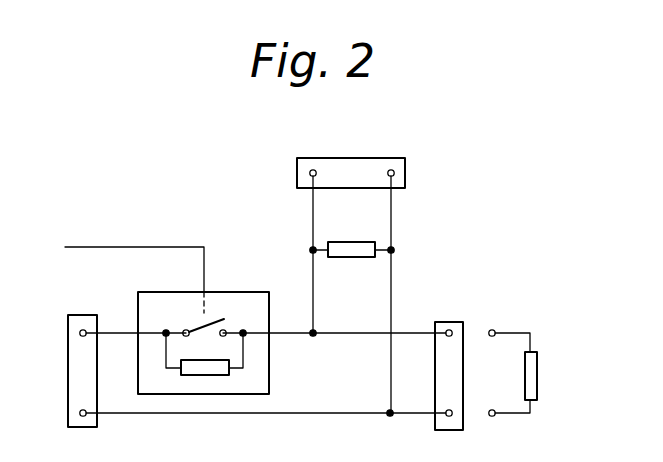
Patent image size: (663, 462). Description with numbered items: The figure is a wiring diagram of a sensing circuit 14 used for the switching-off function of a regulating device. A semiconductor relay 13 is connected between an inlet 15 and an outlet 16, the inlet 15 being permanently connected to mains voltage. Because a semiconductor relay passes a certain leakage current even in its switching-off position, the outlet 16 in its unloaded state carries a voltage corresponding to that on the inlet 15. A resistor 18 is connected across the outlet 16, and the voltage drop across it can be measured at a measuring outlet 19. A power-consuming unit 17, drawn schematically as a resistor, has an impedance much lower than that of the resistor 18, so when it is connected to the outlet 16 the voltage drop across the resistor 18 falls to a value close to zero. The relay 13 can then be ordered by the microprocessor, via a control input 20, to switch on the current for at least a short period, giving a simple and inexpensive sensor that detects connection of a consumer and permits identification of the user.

The semiconductor relay 13 is at (232, 312).
The sensing circuit 14 is at (418, 277).
The inlet 15 is at (71, 368).
The outlet 16 is at (455, 373).
The power-consuming unit 17 is at (538, 377).
The resistor 18 is at (350, 258).
The measuring outlet 19 is at (352, 166).
The control input 20 is at (83, 246).